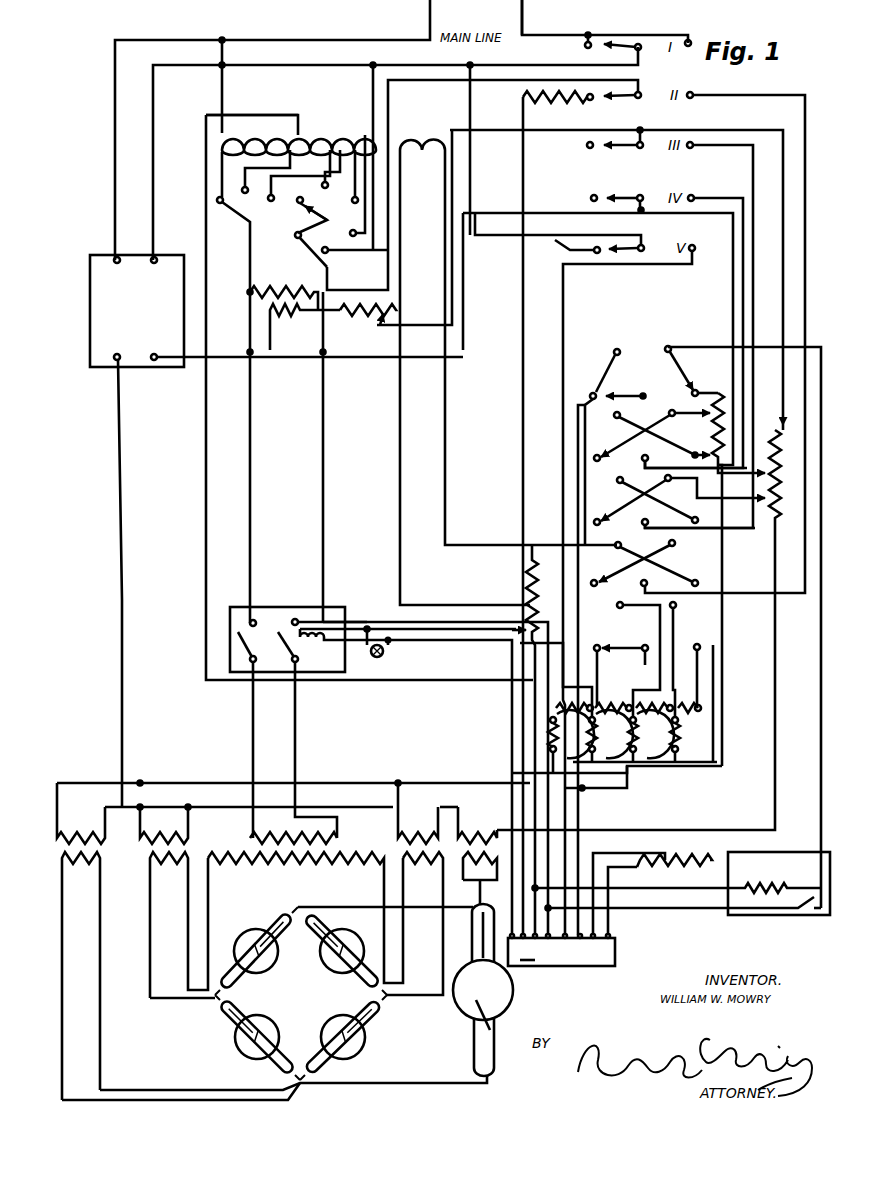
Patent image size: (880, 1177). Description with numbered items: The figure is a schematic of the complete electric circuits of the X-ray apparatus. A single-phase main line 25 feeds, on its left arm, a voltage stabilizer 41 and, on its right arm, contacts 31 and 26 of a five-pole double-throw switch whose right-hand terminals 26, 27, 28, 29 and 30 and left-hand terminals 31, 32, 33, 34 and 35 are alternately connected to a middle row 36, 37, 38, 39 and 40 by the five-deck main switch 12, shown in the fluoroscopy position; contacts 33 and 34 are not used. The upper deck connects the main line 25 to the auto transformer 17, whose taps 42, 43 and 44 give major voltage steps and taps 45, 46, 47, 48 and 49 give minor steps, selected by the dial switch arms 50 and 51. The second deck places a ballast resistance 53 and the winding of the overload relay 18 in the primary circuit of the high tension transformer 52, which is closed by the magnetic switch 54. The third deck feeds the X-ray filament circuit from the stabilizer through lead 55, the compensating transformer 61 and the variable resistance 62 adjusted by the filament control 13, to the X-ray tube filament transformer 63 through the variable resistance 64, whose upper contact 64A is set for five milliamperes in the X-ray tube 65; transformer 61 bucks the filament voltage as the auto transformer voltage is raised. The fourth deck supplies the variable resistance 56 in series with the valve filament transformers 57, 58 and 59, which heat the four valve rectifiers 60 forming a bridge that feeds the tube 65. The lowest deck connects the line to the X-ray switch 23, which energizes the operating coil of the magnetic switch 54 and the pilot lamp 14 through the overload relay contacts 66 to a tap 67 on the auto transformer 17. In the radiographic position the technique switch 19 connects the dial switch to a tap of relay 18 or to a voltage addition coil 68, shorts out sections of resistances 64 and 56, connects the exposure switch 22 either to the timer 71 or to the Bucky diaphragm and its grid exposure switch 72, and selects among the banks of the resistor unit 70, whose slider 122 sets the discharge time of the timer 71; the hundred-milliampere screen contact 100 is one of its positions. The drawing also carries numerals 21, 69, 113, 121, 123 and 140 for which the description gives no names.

The main switch 12 is at (622, 44).
The filament milliamperage control 13 is at (411, 239).
The pilot lamp 14 is at (372, 655).
The auto transformer 17 is at (340, 136).
The overload relay 18 is at (520, 625).
The technique switch 19 is at (659, 609).
The resistor 21 is at (688, 860).
The exposure switch 22 is at (546, 690).
The X-ray switch 23 is at (558, 250).
The main line 25 is at (550, 30).
The switch contact 26 is at (690, 40).
The switch contact 27 is at (725, 334).
The switch contact 28 is at (699, 326).
The switch contact 29 is at (694, 322).
The switch contact 30 is at (640, 582).
The switch contact 31 is at (578, 44).
The switch contact 32 is at (602, 107).
The switch contact 33 is at (591, 155).
The switch contact 34 is at (581, 199).
The switch contact 35 is at (592, 242).
The middle row contact 36 is at (649, 45).
The middle row contact 37 is at (495, 184).
The middle row contact 38 is at (650, 138).
The middle row contact 39 is at (650, 193).
The middle row contact 40 is at (653, 247).
The voltage stabilizer 41 is at (90, 283).
The auto transformer tap 42 is at (211, 185).
The auto transformer tap 43 is at (264, 181).
The auto transformer tap 44 is at (296, 186).
The auto transformer tap 45 is at (295, 238).
The auto transformer tap 46 is at (329, 178).
The auto transformer tap 47 is at (349, 185).
The auto transformer tap 48 is at (350, 188).
The auto transformer tap 49 is at (355, 257).
The dial switch arm 50 is at (240, 216).
The dial switch arm 51 is at (312, 215).
The high tension transformer 52 is at (234, 838).
The ballast resistance 53 is at (555, 107).
The magnetic switch 54 is at (371, 771).
The lead 55 is at (236, 357).
The variable resistance 56 is at (716, 428).
The valve filament transformer 57 is at (70, 831).
The valve filament transformer 58 is at (160, 834).
The valve filament transformer 59 is at (410, 831).
The valve tube rectifiers 60 is at (313, 975).
The compensating transformer 61 is at (295, 319).
The variable resistance 62 is at (362, 314).
The X-ray tube filament transformer 63 is at (478, 828).
The variable resistance 64 is at (776, 498).
The upper contact 64A is at (780, 429).
The X-ray tube 65 is at (458, 988).
The overload relay coil 66 is at (529, 581).
The auto transformer tap 67 is at (272, 115).
The voltage addition coil 68 is at (410, 133).
The Bucky diaphragm 69 is at (776, 862).
The resistor unit 70 is at (649, 707).
The timer 71 is at (616, 952).
The grid exposure switch 72 is at (800, 912).
The screens contact 100 is at (603, 368).
The timer terminal 113 is at (528, 966).
The conductor junction 121 is at (580, 791).
The slider 122 is at (674, 771).
The conductor 123 is at (717, 670).
The grid contact 140 is at (692, 371).